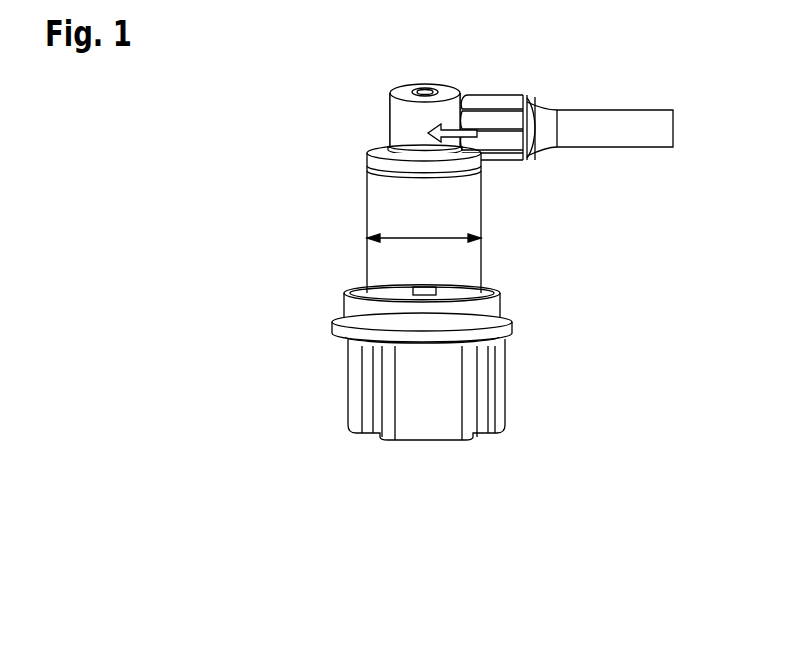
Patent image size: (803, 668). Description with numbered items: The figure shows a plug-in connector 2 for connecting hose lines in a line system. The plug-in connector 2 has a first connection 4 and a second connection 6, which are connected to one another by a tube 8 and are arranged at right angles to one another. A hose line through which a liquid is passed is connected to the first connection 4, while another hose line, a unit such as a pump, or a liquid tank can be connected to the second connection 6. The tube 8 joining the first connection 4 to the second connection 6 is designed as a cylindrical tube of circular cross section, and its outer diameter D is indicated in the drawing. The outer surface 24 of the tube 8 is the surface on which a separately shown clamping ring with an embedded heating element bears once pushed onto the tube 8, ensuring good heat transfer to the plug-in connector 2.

The plug-in connector 2 is at (644, 297).
The first connection 4 is at (621, 135).
The second connection 6 is at (490, 393).
The tube 8 is at (375, 250).
The outer surface 24 is at (395, 212).
The outer diameter D is at (427, 240).